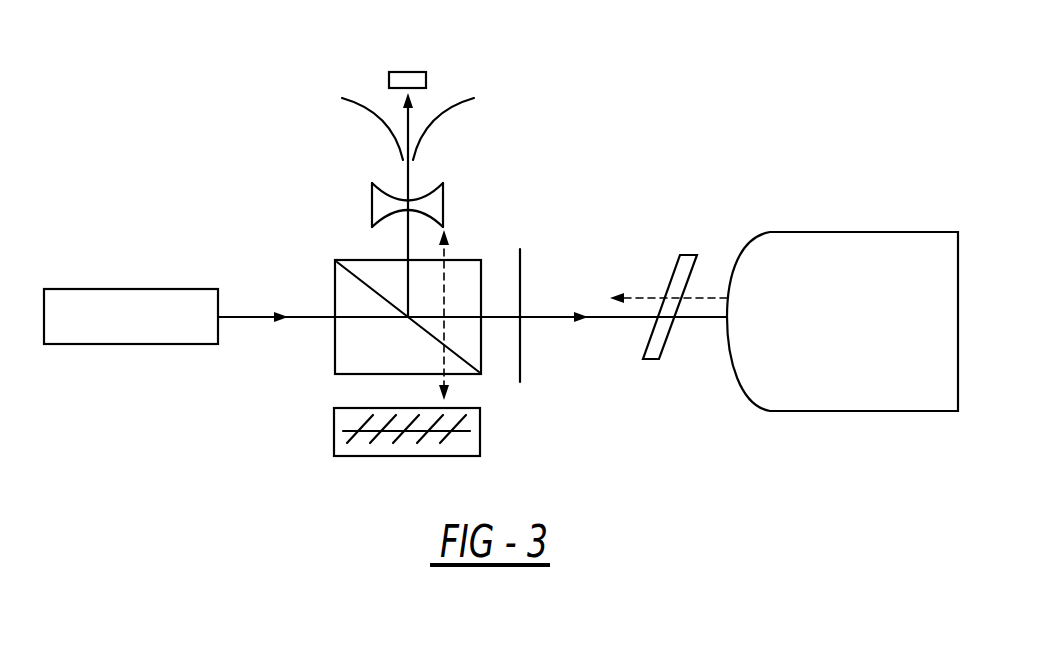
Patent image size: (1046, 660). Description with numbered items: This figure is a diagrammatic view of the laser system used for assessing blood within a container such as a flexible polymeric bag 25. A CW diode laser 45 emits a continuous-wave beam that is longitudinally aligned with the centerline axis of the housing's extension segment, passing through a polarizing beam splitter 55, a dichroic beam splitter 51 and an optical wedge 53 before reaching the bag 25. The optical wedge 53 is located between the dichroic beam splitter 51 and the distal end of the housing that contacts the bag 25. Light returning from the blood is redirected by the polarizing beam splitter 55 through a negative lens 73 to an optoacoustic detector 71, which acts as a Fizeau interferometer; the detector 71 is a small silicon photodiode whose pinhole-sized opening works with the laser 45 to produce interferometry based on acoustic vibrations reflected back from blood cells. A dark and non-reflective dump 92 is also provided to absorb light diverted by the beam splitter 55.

The flexible polymeric bag 25 is at (880, 328).
The CW diode laser 45 is at (192, 330).
The dichroic beam splitter 51 is at (521, 266).
The optical wedge 53 is at (690, 255).
The polarizing beam splitter 55 is at (336, 280).
The optoacoustic detector 71 is at (420, 72).
The negative lens 73 is at (372, 211).
The dark and non-reflective dump 92 is at (480, 442).